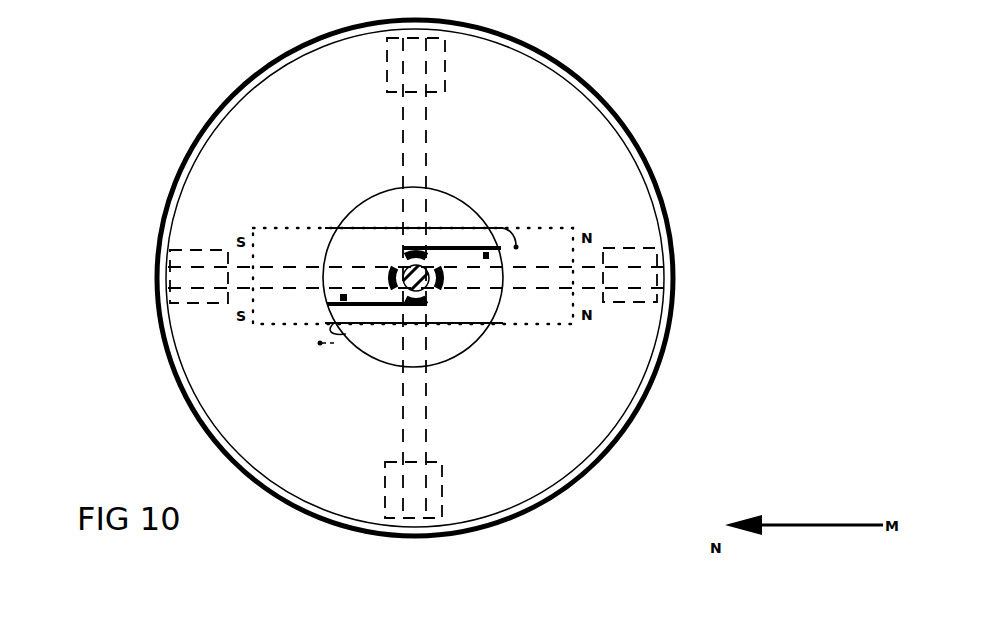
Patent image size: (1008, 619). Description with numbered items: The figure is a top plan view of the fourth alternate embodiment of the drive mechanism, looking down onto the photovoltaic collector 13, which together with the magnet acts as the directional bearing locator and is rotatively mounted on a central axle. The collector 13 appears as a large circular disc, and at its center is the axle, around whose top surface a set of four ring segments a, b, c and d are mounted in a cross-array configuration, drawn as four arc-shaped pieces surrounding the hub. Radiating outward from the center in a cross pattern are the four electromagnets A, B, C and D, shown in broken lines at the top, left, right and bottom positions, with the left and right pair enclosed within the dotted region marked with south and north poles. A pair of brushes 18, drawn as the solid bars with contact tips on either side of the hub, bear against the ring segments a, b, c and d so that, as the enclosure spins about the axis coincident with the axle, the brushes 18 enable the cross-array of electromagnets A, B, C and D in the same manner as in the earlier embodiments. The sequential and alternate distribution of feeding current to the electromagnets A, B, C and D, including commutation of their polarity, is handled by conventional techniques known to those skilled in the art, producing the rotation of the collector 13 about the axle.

The photovoltaic collector 13 is at (606, 167).
The brushes 18 is at (443, 245).
The electromagnet A is at (185, 250).
The electromagnet B is at (443, 92).
The electromagnet C is at (645, 305).
The electromagnet D is at (442, 463).
The ring segment a is at (428, 292).
The ring segment b is at (390, 281).
The ring segment c is at (410, 265).
The ring segment d is at (441, 275).